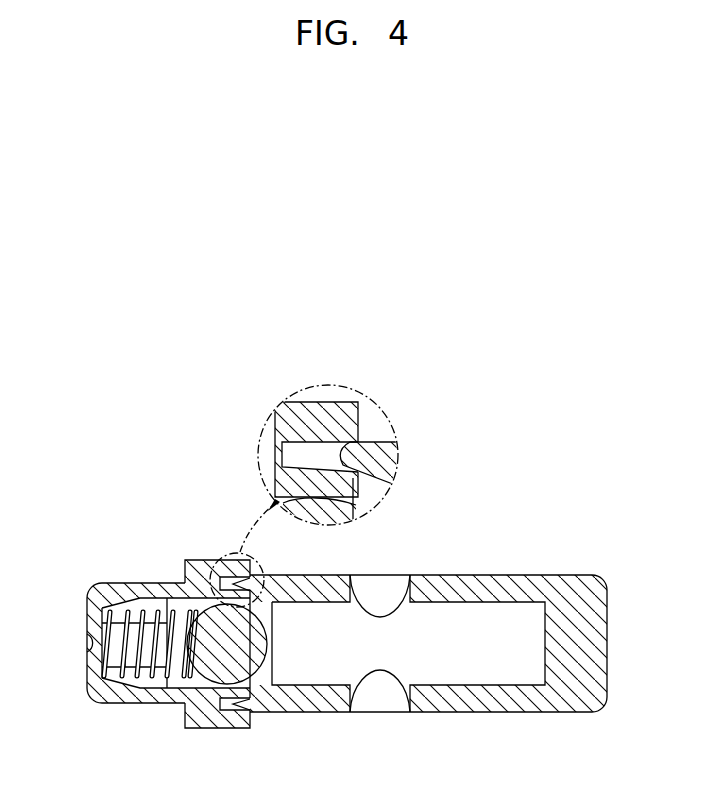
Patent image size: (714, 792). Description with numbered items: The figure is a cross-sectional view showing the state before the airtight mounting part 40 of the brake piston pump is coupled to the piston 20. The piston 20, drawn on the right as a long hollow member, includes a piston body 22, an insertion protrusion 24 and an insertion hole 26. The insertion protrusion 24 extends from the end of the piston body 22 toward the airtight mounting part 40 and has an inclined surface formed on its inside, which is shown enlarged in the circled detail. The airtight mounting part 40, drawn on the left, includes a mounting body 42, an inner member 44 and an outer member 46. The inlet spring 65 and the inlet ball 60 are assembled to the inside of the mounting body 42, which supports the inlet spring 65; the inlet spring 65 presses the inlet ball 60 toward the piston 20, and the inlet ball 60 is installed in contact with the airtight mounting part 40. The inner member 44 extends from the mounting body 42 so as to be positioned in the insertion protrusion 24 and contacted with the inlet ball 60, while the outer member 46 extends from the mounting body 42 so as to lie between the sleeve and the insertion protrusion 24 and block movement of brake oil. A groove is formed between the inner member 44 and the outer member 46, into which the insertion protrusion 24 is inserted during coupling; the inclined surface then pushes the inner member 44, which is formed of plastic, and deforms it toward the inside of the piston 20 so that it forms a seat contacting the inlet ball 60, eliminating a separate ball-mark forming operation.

The piston 20 is at (428, 625).
The piston body 22 is at (530, 702).
The insertion protrusion 24 is at (356, 445).
The insertion hole 26 is at (382, 596).
The airtight mounting part 40 is at (235, 553).
The mounting body 42 is at (98, 593).
The inner member 44 is at (345, 485).
The outer member 46 is at (338, 412).
The inlet ball 60 is at (257, 668).
The inlet spring 65 is at (140, 606).